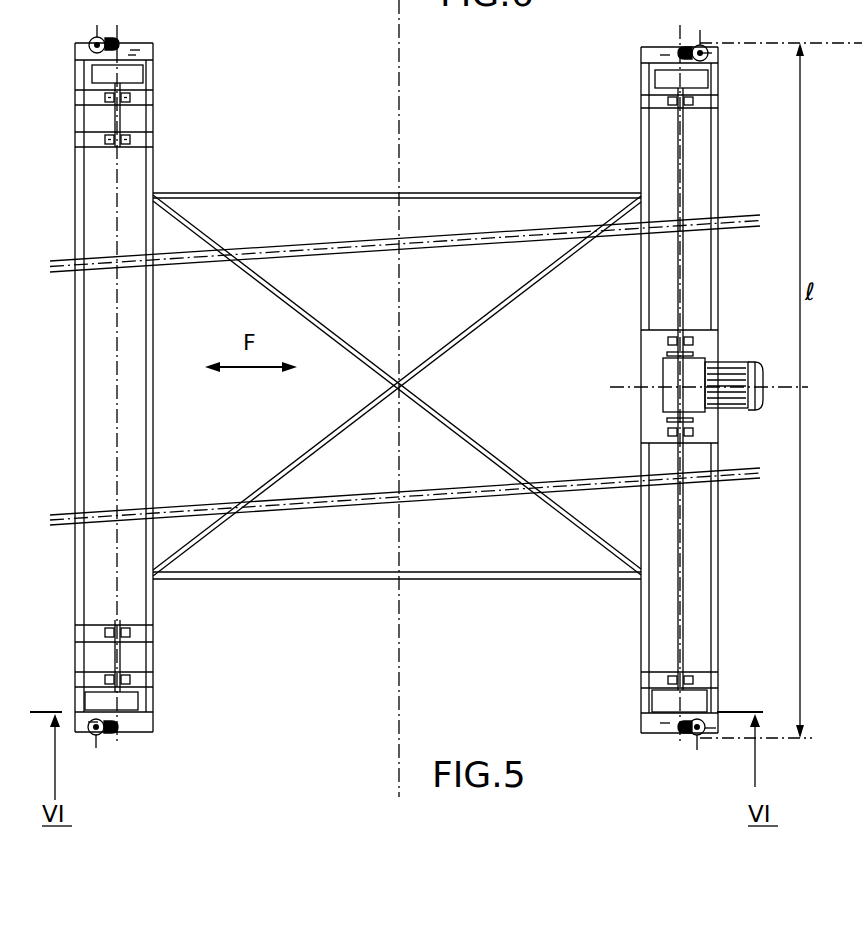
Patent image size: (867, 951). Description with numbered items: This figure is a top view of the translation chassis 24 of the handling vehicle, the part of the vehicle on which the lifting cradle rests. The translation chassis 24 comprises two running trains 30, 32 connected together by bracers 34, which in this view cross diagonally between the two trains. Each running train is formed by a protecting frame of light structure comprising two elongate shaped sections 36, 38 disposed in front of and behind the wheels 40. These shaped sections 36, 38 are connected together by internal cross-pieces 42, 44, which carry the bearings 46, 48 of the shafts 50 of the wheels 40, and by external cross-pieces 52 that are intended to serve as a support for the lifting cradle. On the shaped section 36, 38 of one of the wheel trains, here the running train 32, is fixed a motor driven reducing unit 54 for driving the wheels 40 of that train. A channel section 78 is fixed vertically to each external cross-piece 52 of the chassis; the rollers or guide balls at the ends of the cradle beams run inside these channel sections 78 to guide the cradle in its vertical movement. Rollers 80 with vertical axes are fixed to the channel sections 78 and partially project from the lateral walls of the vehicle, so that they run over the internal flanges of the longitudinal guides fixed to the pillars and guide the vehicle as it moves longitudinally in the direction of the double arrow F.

The translation chassis 24 is at (479, 188).
The running train 30 is at (126, 387).
The running train 32 is at (728, 290).
The bracers 34 is at (560, 513).
The elongate shaped section 36 is at (76, 446).
The elongate shaped section 38 is at (148, 440).
The wheels 40 is at (128, 700).
The internal cross-piece 42 is at (145, 97).
The internal cross-piece 44 is at (145, 140).
The bearing 46 is at (105, 97).
The bearing 48 is at (105, 140).
The shafts 50 is at (119, 656).
The external cross-pieces 52 is at (148, 52).
The motor driven reducing unit 54 is at (737, 375).
The channel section 78 is at (118, 40).
The rollers 80 is at (93, 38).